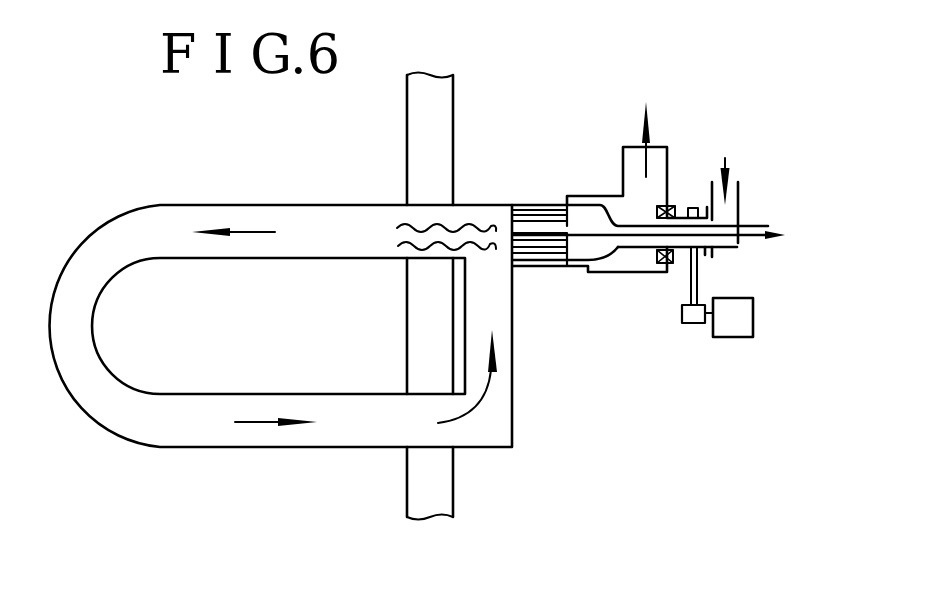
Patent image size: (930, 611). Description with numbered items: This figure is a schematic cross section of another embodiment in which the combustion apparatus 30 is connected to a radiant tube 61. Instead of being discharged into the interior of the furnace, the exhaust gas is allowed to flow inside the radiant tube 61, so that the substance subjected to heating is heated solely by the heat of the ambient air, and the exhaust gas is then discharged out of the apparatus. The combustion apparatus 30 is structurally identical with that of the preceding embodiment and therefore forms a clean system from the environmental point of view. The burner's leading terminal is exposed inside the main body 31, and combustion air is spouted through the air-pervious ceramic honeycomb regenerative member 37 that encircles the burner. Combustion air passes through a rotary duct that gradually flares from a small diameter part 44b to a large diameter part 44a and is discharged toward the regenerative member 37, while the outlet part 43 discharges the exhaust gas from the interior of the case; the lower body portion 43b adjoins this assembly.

The radiant tube 61 is at (242, 204).
The main body of combustion apparatus 31 is at (470, 106).
The regenerative member 37 is at (537, 205).
The outlet part 43 is at (660, 172).
The lower burner body with bearing and drive 43b is at (641, 273).
The large diameter part 44a is at (586, 273).
The small diameter part 44b is at (722, 248).
The combustion apparatus 30 is at (625, 320).